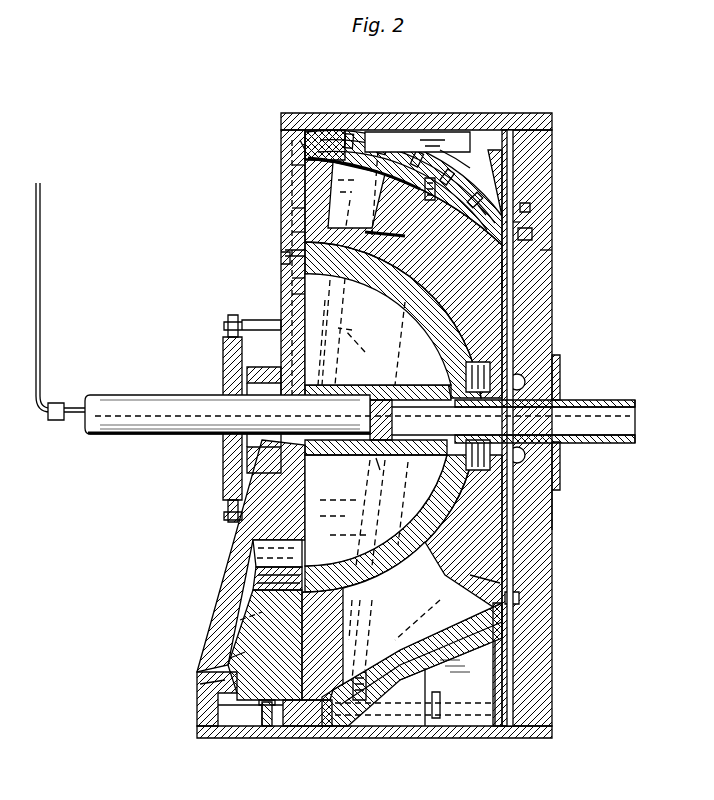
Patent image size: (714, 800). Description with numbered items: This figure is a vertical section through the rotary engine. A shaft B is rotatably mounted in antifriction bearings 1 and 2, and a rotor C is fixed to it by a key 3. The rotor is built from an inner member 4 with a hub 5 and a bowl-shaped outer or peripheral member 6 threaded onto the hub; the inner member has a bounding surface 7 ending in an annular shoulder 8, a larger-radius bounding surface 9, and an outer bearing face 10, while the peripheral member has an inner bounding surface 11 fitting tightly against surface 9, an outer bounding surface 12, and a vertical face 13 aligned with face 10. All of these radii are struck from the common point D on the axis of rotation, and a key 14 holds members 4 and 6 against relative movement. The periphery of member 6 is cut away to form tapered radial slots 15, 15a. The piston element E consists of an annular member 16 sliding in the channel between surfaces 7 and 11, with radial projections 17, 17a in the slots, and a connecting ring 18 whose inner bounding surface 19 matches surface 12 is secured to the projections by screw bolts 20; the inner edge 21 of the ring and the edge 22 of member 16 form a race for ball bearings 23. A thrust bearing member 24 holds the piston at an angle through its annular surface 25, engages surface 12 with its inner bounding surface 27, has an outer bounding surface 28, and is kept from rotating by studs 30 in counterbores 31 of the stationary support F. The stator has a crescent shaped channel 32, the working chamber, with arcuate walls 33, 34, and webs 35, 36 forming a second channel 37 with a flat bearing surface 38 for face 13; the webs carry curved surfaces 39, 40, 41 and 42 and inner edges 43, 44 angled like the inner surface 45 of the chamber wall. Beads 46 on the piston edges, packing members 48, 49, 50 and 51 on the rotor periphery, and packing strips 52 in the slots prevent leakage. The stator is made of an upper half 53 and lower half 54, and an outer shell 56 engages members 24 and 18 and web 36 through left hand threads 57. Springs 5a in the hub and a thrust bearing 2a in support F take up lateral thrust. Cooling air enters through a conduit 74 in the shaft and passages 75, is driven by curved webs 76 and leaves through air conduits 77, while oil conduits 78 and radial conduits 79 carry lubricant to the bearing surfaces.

The antifriction bearing 1 is at (245, 452).
The antifriction bearing 2 is at (560, 462).
The thrust bearing 2a is at (560, 380).
The key 3 is at (462, 172).
The inner member 4 is at (420, 318).
The hub 5 is at (552, 358).
The springs 5a is at (466, 455).
The outer or peripheral member 6 is at (552, 272).
The bounding surface 7 is at (378, 406).
The annular shoulder 8 is at (389, 468).
The bounding surface 9 is at (410, 330).
The outer bearing face 10 is at (300, 582).
The inner bounding surface 11 is at (360, 611).
The outer bounding surface 12 is at (425, 752).
The vertical face 13 is at (300, 185).
The key 14 is at (552, 500).
The radial slot 15 is at (386, 160).
The radial slot 15a is at (520, 583).
The annular member 16 is at (270, 607).
The radial projection 17 is at (457, 144).
The radial projection 17a is at (200, 684).
The connecting ring 18 is at (240, 722).
The inner bounding surface 19 is at (205, 712).
The screw bolts 20 is at (432, 182).
The inner edge 21 is at (530, 207).
The edge 22 is at (300, 294).
The ball bearings 23 is at (552, 216).
The thrust bearing member 24 is at (500, 650).
The annular surface 25 is at (520, 228).
The inner bounding surface 27 is at (562, 252).
The outer bounding surface 28 is at (552, 175).
The studs 30 is at (522, 598).
The counterbores 31 is at (548, 570).
The crescent shaped channel 32 is at (240, 620).
The arcuate wall 33 is at (300, 592).
The arcuate wall 34 is at (266, 730).
The web 35 is at (300, 232).
The web 36 is at (352, 134).
The second channel 37 is at (300, 210).
The flat bearing surface 38 is at (300, 172).
The curved surface 39 is at (300, 278).
The curved surface 40 is at (343, 201).
The curved surface 41 is at (322, 128).
The curved surface 42 is at (340, 128).
The inner edge 43 is at (389, 238).
The inner edge 44 is at (400, 128).
The inner surface 45 is at (240, 660).
The beads 46 is at (262, 575).
The spring pressed packing member 48 is at (300, 148).
The spring pressed packing member 49 is at (378, 150).
The spring pressed packing member 50 is at (285, 258).
The spring pressed packing member 51 is at (321, 342).
The spring pressed packing strips 52 is at (453, 395).
The upper half 53 is at (281, 352).
The lower half 54 is at (230, 522).
The outer shell 56 is at (415, 420).
The left hand threads 57 is at (300, 113).
The conduit 74 is at (600, 412).
The passages 75 is at (381, 472).
The curved webs 76 is at (327, 508).
The air conduits 77 is at (345, 506).
The oil conduits 78 is at (78, 430).
The radial conduits 79 is at (350, 321).
The shaft B is at (185, 438).
The rotor C is at (552, 312).
The common point D is at (399, 569).
The piston element E is at (235, 634).
The stationary support F is at (552, 528).